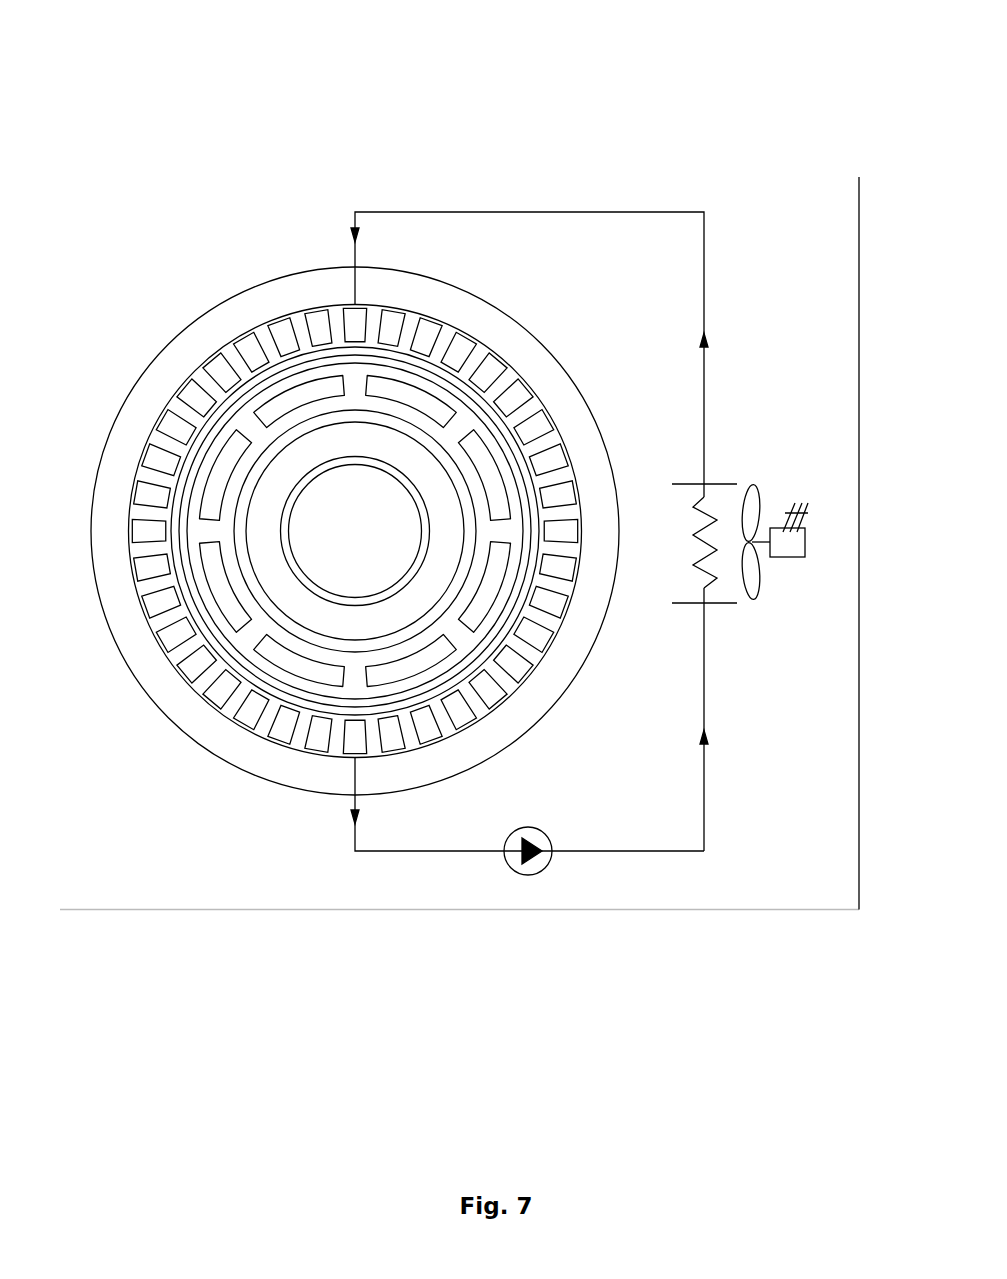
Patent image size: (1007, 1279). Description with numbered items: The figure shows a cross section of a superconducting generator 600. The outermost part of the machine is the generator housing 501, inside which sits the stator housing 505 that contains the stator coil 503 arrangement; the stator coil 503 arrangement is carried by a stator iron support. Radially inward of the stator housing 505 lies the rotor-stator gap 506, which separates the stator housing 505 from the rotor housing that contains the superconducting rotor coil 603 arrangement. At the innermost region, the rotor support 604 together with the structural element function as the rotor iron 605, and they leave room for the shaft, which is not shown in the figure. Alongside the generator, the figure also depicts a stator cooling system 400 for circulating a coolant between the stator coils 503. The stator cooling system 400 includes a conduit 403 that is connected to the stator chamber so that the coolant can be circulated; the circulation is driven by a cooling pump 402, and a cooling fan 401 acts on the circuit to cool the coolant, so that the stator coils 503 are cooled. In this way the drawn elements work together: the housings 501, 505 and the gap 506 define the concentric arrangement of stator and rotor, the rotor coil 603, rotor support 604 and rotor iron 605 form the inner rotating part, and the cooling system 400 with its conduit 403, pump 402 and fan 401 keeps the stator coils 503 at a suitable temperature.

The stator cooling system 400 is at (611, 181).
The cooling fan 401 is at (785, 578).
The cooling pump 402 is at (537, 872).
The conduit 403 is at (703, 815).
The generator housing 501 is at (243, 773).
The stator coil 503 is at (157, 602).
The stator housing 505 is at (192, 687).
The rotor-stator gap 506 is at (212, 421).
The superconducting generator 600 is at (270, 912).
The superconducting rotor coil 603 is at (272, 413).
The rotor support 604 is at (403, 427).
The rotor iron 605 is at (418, 493).